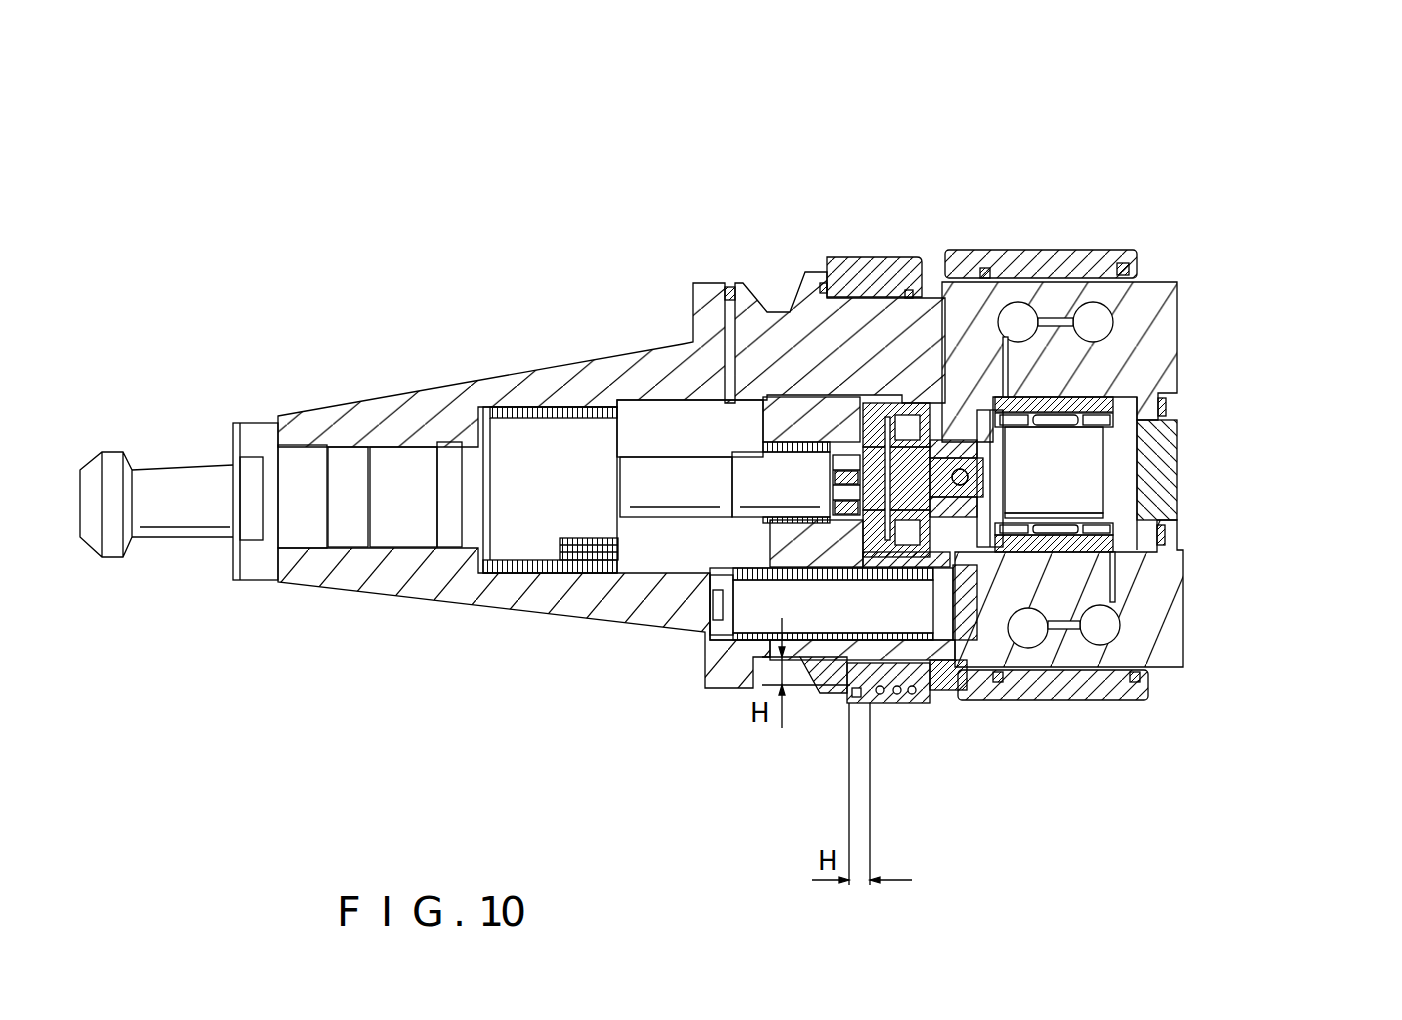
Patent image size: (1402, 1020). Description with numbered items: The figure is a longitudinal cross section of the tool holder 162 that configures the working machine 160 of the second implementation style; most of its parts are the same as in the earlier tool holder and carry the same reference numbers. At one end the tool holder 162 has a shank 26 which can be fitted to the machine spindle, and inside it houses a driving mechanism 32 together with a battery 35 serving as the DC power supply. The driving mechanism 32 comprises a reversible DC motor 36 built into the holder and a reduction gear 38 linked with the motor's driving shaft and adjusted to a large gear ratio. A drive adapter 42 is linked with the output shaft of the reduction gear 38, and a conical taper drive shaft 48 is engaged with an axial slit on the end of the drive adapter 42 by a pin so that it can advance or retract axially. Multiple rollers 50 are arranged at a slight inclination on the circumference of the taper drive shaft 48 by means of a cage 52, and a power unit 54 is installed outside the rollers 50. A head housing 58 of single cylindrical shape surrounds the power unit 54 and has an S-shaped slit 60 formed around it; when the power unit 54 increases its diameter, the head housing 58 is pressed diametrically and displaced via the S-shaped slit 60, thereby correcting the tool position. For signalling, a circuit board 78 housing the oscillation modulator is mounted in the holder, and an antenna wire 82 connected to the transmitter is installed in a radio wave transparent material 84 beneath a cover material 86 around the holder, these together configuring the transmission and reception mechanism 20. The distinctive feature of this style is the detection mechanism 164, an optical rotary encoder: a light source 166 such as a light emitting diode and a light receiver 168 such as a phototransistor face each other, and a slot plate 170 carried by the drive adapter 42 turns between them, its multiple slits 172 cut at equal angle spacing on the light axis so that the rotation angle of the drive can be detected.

The transmission and reception mechanism 20 is at (928, 750).
The shank 26 is at (415, 405).
The driving mechanism 32 is at (647, 553).
The battery 35 is at (707, 673).
The DC motor 36 is at (483, 545).
The reduction gear 38 is at (775, 480).
The drive adapter 42 is at (690, 598).
The taper drive shaft 48 is at (1062, 487).
The rollers 50 is at (1077, 427).
The cage 52 is at (1180, 520).
The power unit 54 is at (1135, 333).
The head housing 58 is at (1155, 283).
The S-shaped slit 60 is at (1075, 257).
The circuit board 78 is at (542, 448).
The antenna wire 82 is at (900, 703).
The radio wave transparent material 84 is at (940, 517).
The cover material 86 is at (930, 697).
The working machine 160 is at (803, 82).
The tool holder 162 is at (1003, 173).
The detection mechanism 164 is at (893, 417).
The light source 166 is at (835, 450).
The light receiver 168 is at (950, 400).
The slot plate 170 is at (1095, 700).
The slits 172 is at (945, 430).